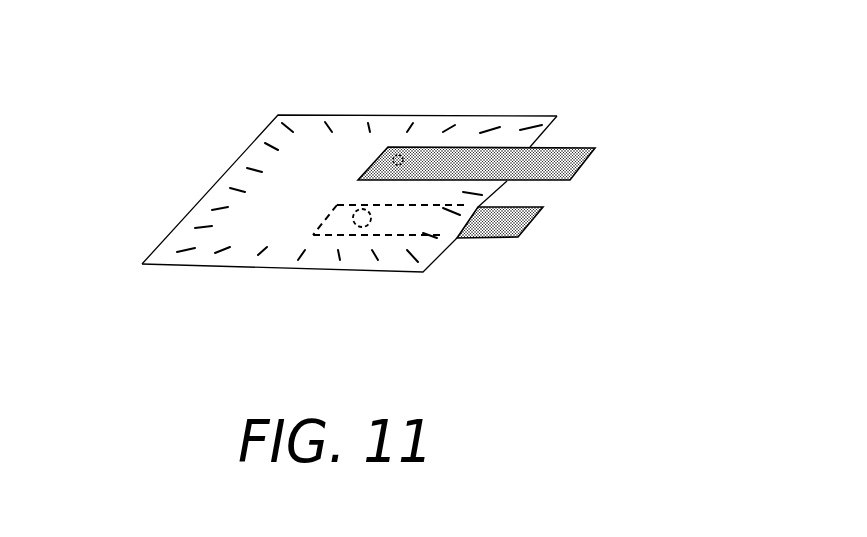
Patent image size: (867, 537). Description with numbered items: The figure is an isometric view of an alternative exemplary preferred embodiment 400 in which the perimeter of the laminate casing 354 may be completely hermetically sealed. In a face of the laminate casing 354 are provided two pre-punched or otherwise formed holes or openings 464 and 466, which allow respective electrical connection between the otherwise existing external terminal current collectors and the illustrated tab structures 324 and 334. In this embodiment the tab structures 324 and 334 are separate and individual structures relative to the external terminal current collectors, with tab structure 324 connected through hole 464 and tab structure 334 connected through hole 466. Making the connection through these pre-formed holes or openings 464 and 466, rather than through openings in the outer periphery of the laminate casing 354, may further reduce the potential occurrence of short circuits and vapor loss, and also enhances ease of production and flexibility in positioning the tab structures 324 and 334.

The alternative exemplary preferred embodiment 400 is at (165, 160).
The laminate casing 354 is at (296, 172).
The tab structure 324 is at (595, 148).
The tab structure 334 is at (530, 226).
The hole or opening 464 is at (398, 156).
The hole or opening 466 is at (356, 237).